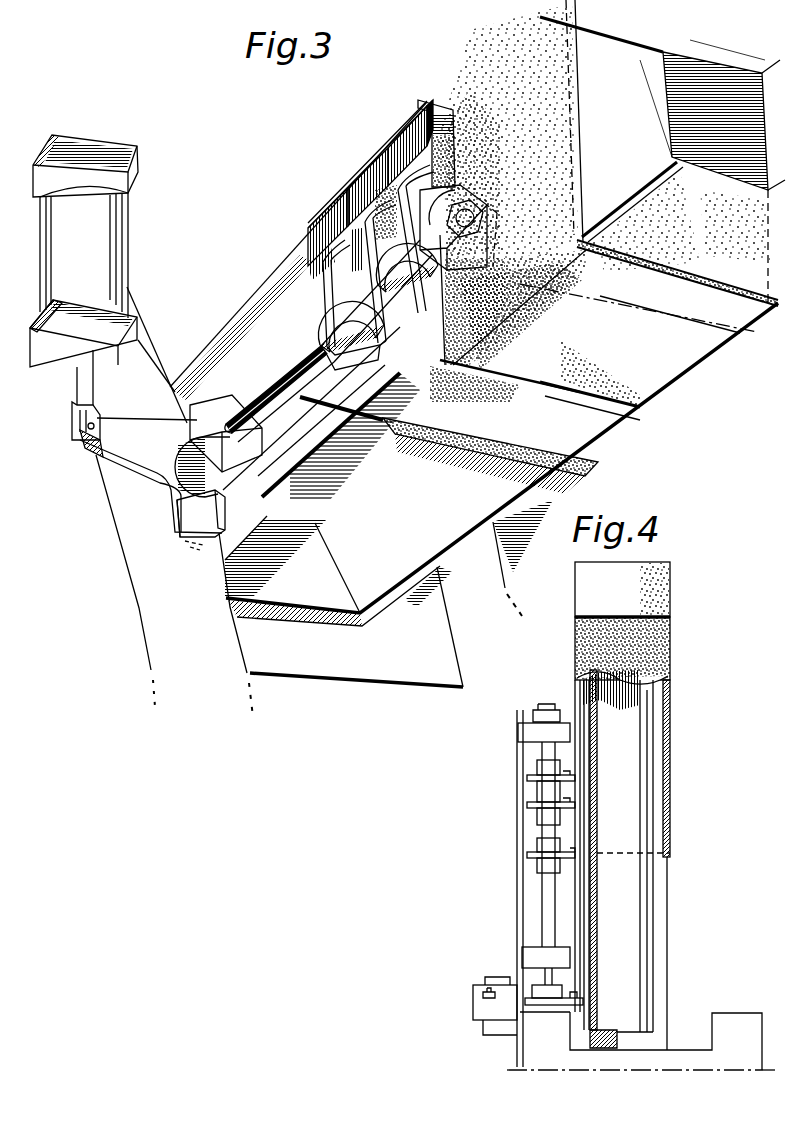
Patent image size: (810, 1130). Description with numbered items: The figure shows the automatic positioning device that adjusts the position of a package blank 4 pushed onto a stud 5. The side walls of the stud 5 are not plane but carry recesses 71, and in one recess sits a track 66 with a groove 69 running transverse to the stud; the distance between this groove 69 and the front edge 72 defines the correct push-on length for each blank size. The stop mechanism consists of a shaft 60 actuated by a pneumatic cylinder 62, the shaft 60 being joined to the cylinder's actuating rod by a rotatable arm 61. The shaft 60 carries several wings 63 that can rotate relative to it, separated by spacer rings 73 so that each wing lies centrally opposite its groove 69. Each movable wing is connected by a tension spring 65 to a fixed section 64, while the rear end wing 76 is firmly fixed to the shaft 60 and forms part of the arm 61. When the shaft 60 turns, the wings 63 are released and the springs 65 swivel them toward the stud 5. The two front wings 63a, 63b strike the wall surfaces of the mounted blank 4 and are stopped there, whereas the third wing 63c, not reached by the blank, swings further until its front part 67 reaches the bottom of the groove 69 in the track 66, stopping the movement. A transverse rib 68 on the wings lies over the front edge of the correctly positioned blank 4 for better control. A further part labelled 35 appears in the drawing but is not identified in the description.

In FIG. 3, the package blank 4 is at (685, 348).
In FIG. 4, the package blank 4 is at (652, 646).
In FIG. 3, the stud 5 is at (450, 548).
In FIG. 4, the stud 5 is at (661, 981).
In FIG. 3, the cover plate 35 is at (750, 265).
In FIG. 4, the cover plate 35 is at (653, 590).
In FIG. 3, the shaft 60 is at (289, 356).
In FIG. 4, the shaft 60 is at (543, 901).
In FIG. 3, the rotatable arm 61 is at (153, 430).
In FIG. 4, the rotatable arm 61 is at (522, 1013).
In FIG. 3, the pneumatic cylinder 62 is at (107, 237).
In FIG. 4, the wings 63 is at (527, 856).
In FIG. 3, the front wing 63a is at (371, 172).
In FIG. 3, the front wing 63b is at (347, 193).
In FIG. 3, the third wing 63c is at (326, 214).
In FIG. 3, the section 64 is at (426, 108).
In FIG. 3, the tension spring 65 is at (479, 96).
In FIG. 3, the track 66 is at (300, 442).
In FIG. 4, the track 66 is at (585, 750).
In FIG. 3, the front part 67 is at (441, 378).
In FIG. 4, the front part 67 is at (586, 855).
In FIG. 3, the transverse rib 68 is at (480, 343).
In FIG. 4, the transverse rib 68 is at (575, 797).
In FIG. 4, the groove 69 is at (577, 808).
In FIG. 3, the recesses 71 is at (398, 560).
In FIG. 4, the recesses 71 is at (645, 935).
In FIG. 3, the front edge 72 is at (577, 250).
In FIG. 3, the spacer rings 73 is at (396, 282).
In FIG. 3, the rear end wing 76 is at (197, 517).
In FIG. 4, the rear end wing 76 is at (585, 1005).